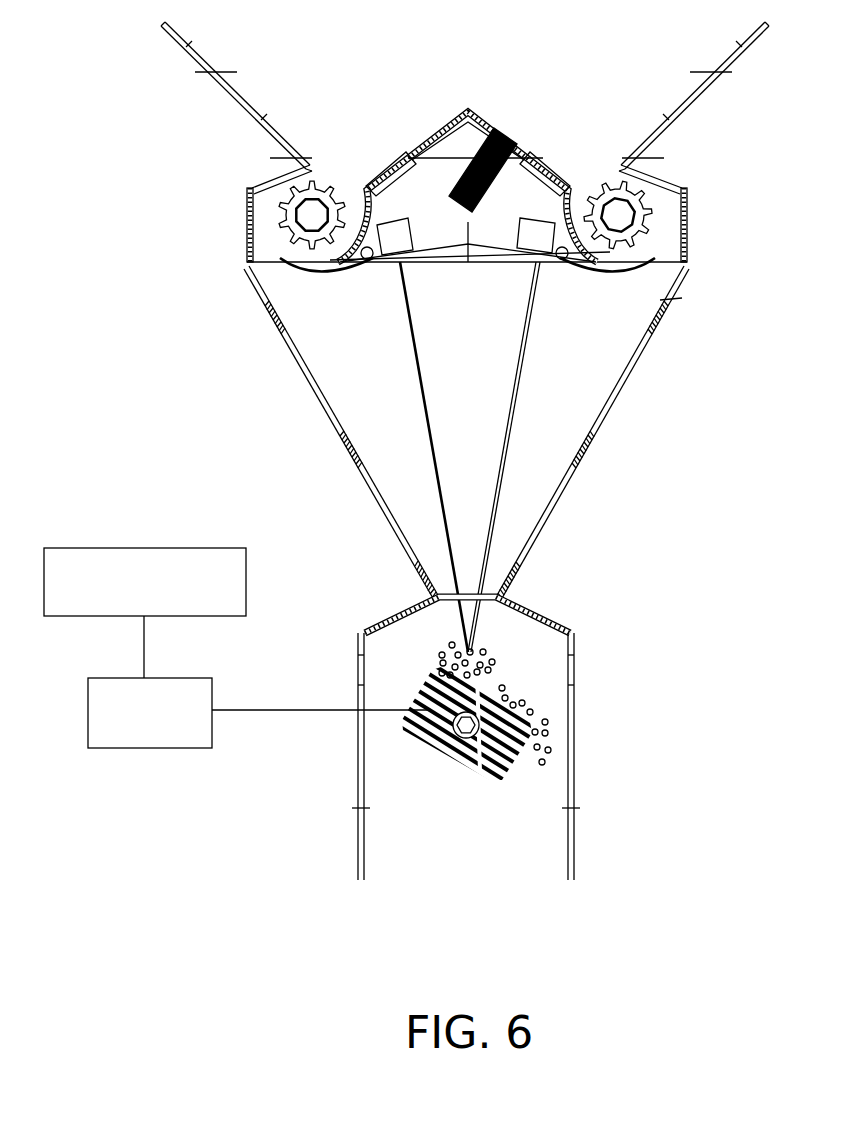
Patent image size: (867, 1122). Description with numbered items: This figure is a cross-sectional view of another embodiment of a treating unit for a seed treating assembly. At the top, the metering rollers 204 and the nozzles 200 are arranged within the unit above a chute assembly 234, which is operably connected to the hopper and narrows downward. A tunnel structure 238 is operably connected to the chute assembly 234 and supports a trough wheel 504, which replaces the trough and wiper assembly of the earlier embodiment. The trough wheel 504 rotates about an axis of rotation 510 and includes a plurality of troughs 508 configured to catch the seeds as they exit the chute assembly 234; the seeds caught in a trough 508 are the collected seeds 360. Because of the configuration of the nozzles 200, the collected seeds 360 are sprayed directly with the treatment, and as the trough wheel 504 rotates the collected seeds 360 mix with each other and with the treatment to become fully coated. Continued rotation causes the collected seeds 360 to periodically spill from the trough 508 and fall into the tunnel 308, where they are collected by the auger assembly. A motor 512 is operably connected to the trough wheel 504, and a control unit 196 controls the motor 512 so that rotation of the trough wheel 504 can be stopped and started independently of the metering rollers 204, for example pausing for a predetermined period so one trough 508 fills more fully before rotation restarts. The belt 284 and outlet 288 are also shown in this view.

The control unit 196 is at (152, 548).
The nozzles 200 is at (395, 262).
The metering rollers 204 is at (297, 193).
The chute assembly 234 is at (705, 480).
The tunnel structure 238 is at (575, 787).
The belt 284 is at (508, 395).
The outlet 288 is at (440, 655).
The tunnel 308 is at (390, 865).
The collected seeds 360 is at (508, 632).
The trough wheel 504 is at (433, 743).
The troughs 508 is at (523, 685).
The axis of rotation 510 is at (478, 762).
The motor 512 is at (105, 678).